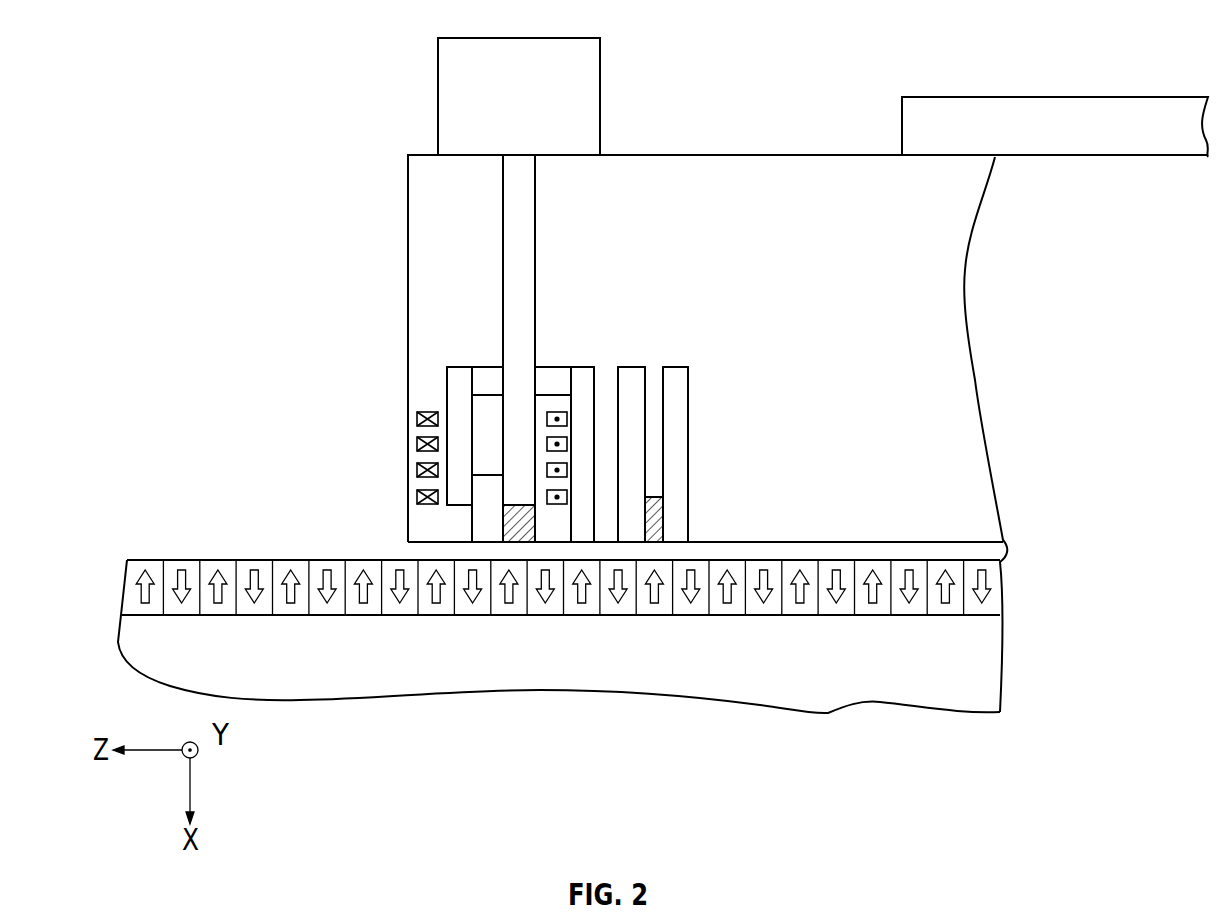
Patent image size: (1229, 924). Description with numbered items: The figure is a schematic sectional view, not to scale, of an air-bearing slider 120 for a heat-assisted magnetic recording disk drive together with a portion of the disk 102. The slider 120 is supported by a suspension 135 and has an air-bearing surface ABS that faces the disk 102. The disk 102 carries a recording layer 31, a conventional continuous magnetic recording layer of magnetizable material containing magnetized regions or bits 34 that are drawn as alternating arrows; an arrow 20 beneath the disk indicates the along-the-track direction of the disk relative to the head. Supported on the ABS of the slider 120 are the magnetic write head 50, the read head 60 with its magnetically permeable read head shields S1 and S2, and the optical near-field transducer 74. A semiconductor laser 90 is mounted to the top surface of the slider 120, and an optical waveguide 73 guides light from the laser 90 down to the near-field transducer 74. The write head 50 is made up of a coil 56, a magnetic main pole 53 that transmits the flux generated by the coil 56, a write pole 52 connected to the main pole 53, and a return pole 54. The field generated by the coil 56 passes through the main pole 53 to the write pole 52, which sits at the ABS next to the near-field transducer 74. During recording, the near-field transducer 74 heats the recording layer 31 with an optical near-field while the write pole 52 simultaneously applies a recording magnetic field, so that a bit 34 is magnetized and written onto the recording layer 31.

The media motion direction 20 is at (295, 720).
The recording layer 31 is at (113, 562).
The bits 34 is at (247, 558).
The magnetic write head 50 is at (592, 306).
The write pole 52 is at (488, 473).
The magnetic main pole 53 is at (467, 367).
The return pole 54 is at (594, 368).
The coil 56 is at (400, 403).
The read head 60 is at (665, 528).
The optical waveguide 73 is at (520, 310).
The optical near-field transducer 74 is at (515, 505).
The semiconductor laser 90 is at (452, 92).
The disk 102 is at (995, 720).
The air-bearing slider 120 is at (963, 428).
The suspension 135 is at (1110, 97).
The air-bearing surface ABS is at (428, 553).
The read head shield S1 is at (675, 453).
The read head shield S2 is at (632, 366).